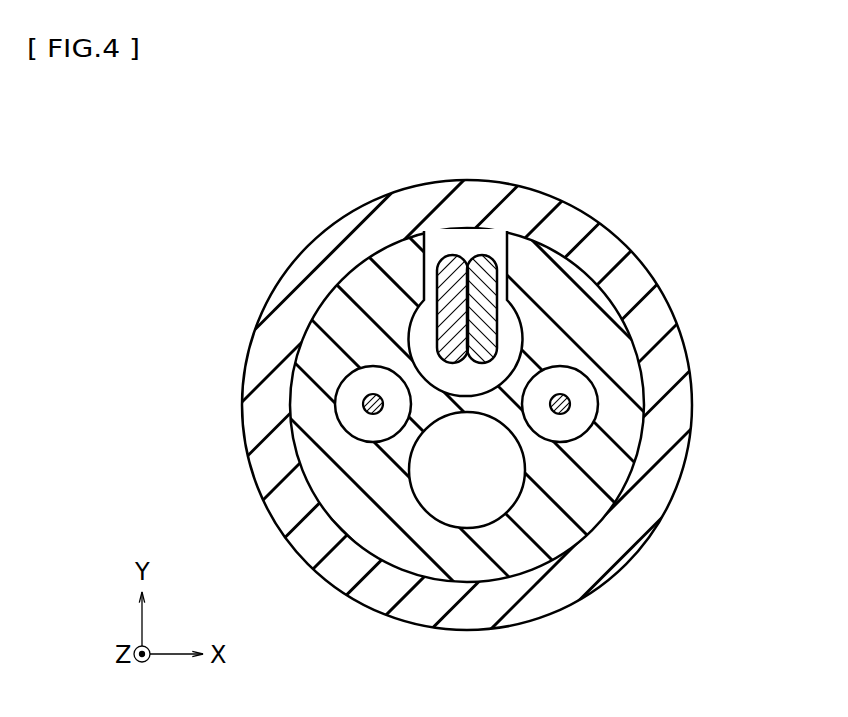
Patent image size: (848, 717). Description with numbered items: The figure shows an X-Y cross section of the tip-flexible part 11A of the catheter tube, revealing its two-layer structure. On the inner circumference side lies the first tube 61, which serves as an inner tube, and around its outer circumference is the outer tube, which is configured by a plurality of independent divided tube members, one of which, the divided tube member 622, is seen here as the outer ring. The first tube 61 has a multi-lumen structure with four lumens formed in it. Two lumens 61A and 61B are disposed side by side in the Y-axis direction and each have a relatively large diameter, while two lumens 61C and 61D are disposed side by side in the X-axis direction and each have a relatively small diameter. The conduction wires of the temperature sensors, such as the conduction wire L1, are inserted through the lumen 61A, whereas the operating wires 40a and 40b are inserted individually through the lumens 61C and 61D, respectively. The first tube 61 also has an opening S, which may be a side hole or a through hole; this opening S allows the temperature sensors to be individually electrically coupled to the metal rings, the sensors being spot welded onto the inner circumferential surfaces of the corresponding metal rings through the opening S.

The tip-flexible part 11A is at (424, 397).
The first tube 61 is at (300, 440).
The divided tube member 622 is at (278, 320).
The lumen 61A is at (425, 330).
The lumen 61B is at (467, 492).
The lumen 61C is at (275, 526).
The lumen 61D is at (658, 525).
The operating wire 40a is at (374, 413).
The operating wire 40b is at (562, 414).
The opening S is at (565, 267).
The conduction wire L1 is at (497, 320).